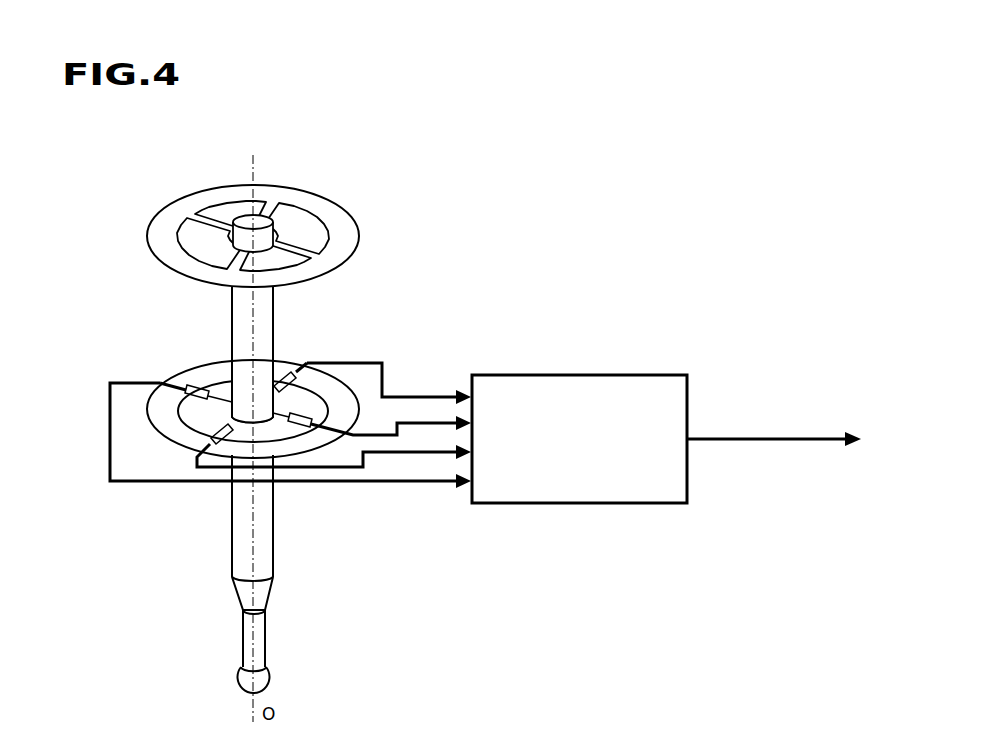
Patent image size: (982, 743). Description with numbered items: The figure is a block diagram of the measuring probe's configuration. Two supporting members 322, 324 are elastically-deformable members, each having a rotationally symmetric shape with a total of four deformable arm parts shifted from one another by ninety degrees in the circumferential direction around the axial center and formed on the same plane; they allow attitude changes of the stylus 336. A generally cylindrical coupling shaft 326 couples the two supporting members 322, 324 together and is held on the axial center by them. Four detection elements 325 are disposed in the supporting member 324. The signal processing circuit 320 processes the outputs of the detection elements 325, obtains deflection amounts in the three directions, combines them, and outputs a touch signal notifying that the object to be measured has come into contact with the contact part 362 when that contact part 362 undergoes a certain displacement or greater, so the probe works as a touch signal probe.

The signal processing circuit 320 is at (485, 433).
The supporting member 322 is at (309, 204).
The supporting member 324 is at (287, 362).
The detection element 325 is at (200, 385).
The coupling shaft 326 is at (278, 307).
The stylus 336 is at (325, 580).
The contact part 362 is at (264, 676).